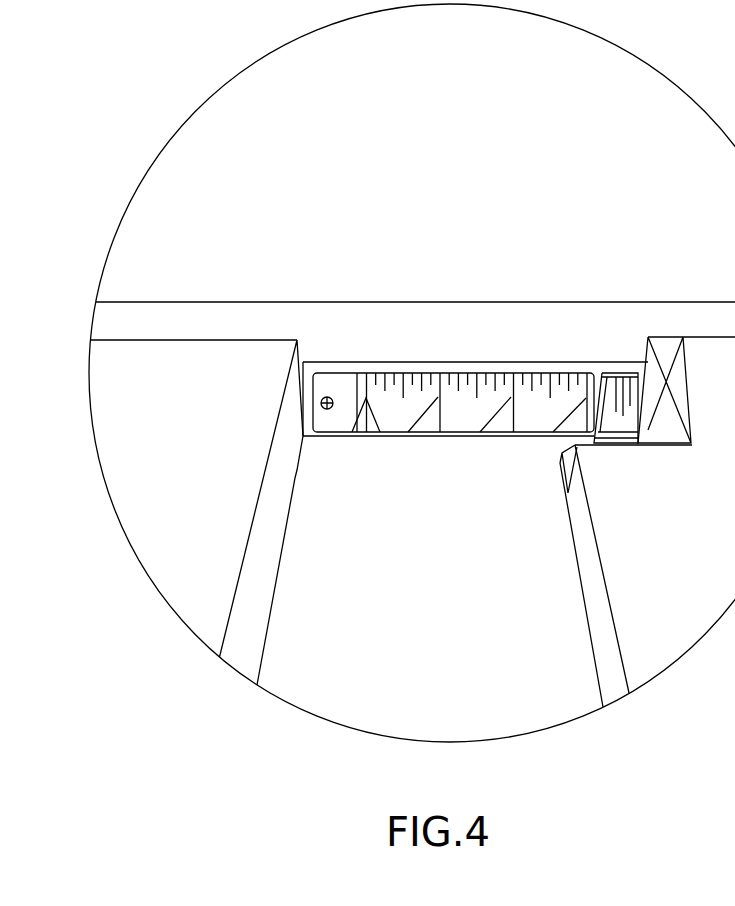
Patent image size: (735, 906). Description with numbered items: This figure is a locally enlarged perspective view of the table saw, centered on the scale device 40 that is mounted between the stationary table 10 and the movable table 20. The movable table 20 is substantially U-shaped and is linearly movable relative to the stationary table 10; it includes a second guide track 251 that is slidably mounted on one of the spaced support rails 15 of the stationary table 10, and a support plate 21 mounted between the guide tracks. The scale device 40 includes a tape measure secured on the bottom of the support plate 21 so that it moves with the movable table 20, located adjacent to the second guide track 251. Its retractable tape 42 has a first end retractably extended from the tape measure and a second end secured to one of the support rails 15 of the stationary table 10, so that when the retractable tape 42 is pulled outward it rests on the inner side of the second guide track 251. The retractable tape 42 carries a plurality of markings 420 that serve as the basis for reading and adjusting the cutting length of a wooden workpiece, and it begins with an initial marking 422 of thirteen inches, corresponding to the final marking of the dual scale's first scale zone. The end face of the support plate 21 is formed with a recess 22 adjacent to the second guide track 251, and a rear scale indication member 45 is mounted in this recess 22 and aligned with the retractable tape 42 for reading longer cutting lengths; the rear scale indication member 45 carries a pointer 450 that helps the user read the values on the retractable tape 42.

The stationary table 10 is at (208, 589).
The support rail 15 is at (308, 395).
The movable table 20 is at (582, 640).
The support plate 21 is at (670, 593).
The recess 22 is at (672, 390).
The second guide track 251 is at (431, 308).
The scale device 40 is at (455, 437).
The retractable tape 42 is at (342, 380).
The markings 420 is at (501, 390).
The initial marking 422 is at (367, 398).
The rear scale indication member 45 is at (611, 392).
The pointer 450 is at (626, 418).